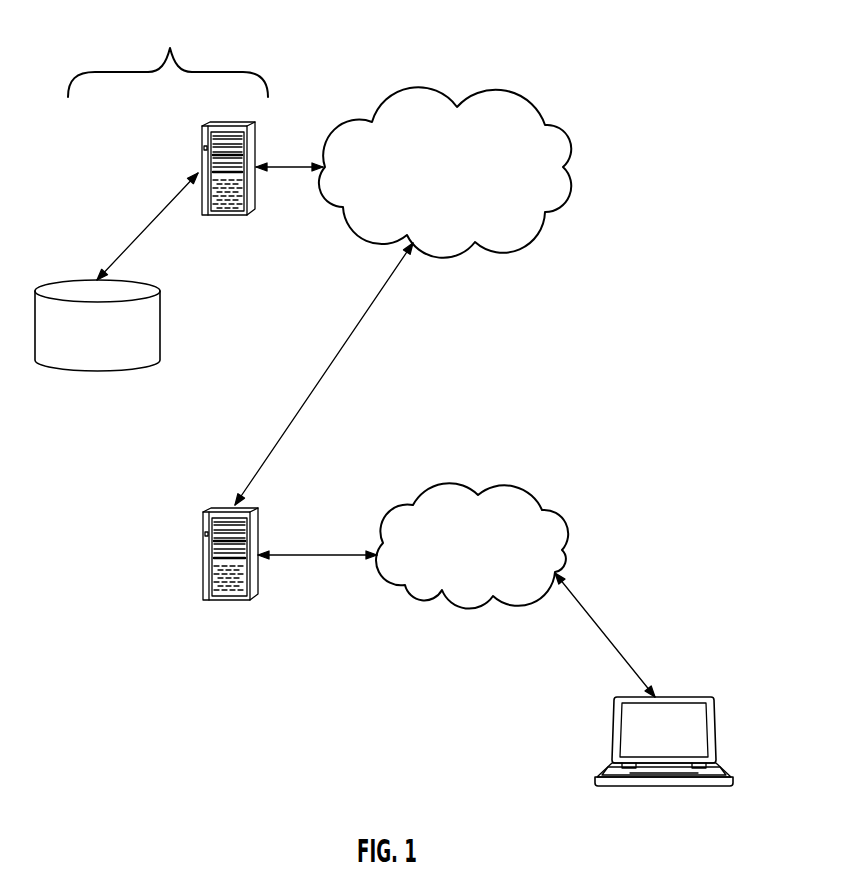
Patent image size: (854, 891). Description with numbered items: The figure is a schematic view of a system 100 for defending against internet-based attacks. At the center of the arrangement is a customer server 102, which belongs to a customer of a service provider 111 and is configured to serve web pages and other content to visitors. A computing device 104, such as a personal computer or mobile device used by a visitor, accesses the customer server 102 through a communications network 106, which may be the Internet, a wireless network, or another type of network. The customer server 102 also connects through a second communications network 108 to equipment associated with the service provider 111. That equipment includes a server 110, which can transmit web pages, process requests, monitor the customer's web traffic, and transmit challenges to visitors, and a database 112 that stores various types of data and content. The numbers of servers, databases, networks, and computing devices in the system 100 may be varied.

The system 100 is at (410, 660).
The customer server 102 is at (230, 601).
The computing device 104 is at (683, 787).
The communications network 106 is at (485, 531).
The communications network 108 is at (458, 155).
The server 110 is at (227, 216).
The service provider 111 is at (168, 58).
The database 112 is at (112, 348).